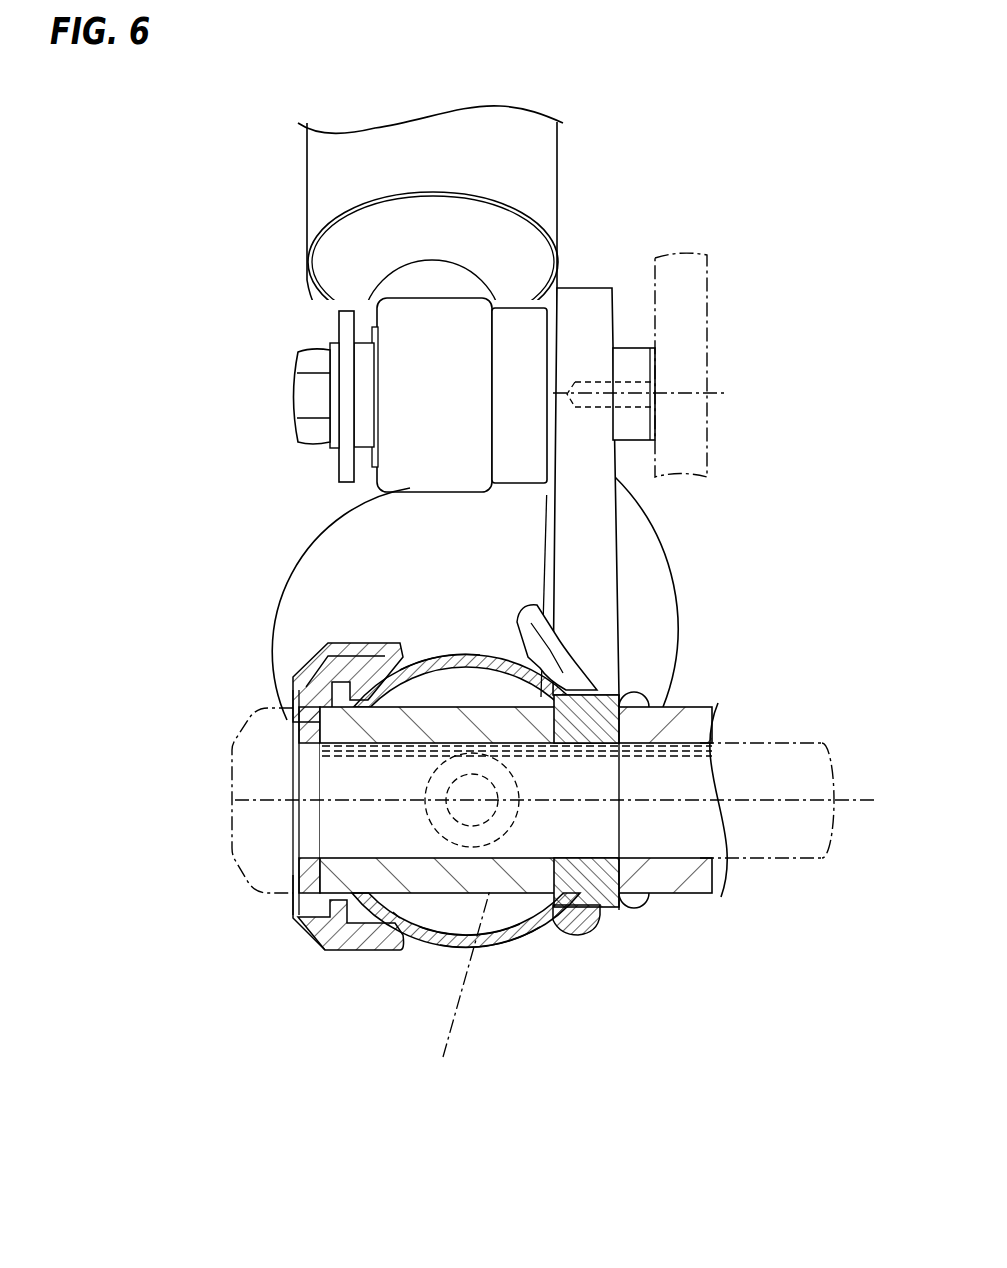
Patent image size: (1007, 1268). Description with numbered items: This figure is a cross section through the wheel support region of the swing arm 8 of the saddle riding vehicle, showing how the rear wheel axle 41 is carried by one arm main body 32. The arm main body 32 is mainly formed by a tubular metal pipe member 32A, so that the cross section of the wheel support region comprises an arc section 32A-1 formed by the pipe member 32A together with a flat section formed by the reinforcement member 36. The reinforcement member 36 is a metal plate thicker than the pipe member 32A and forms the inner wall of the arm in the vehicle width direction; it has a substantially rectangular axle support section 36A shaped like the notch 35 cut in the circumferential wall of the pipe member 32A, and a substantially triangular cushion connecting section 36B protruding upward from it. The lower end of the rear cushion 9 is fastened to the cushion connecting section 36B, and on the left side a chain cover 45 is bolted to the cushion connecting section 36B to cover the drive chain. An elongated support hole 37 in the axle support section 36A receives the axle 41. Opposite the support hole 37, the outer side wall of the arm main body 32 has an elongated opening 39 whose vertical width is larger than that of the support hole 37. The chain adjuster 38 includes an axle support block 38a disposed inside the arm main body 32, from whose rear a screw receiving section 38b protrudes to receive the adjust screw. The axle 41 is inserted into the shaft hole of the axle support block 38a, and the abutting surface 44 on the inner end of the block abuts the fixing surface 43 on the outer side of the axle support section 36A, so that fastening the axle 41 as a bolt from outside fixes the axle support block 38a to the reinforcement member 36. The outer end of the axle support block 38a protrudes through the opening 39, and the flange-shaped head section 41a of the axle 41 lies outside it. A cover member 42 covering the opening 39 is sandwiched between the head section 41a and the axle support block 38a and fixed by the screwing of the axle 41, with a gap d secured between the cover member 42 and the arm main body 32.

The rear cushion 9 is at (540, 172).
The chain cover 45 is at (693, 297).
The cushion connecting section 36B is at (592, 518).
The reinforcement member 36 is at (607, 687).
The axle support section 36A is at (622, 693).
The arc section 32A-1 is at (432, 657).
The pipe member 32A is at (425, 652).
The cover member 42 is at (317, 683).
The abutting surface 44 is at (527, 617).
The head section 41a is at (230, 760).
The fixing surface 43 is at (538, 733).
The opening 39 is at (343, 900).
The support hole 37 is at (607, 850).
The notch 35 is at (591, 933).
The axle 41 is at (782, 857).
The swing arm 8 is at (525, 952).
The arm main body 32 is at (497, 950).
The screw receiving section 38b is at (457, 992).
The chain adjuster 38 is at (443, 906).
The axle support block 38a is at (327, 935).
The gap d is at (395, 912).